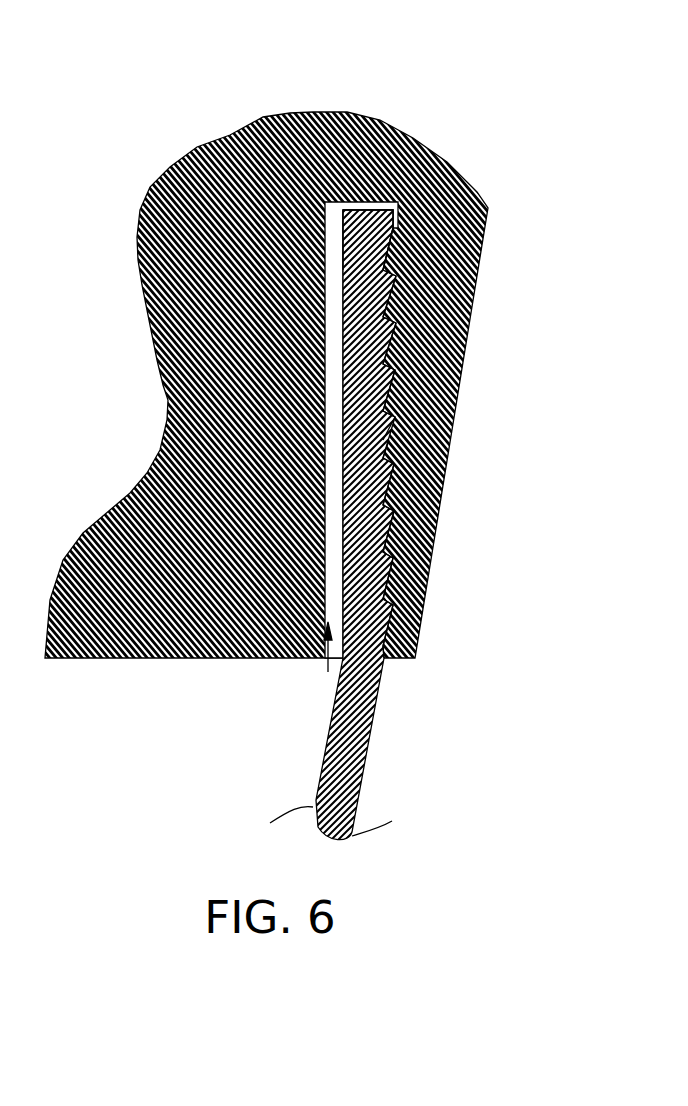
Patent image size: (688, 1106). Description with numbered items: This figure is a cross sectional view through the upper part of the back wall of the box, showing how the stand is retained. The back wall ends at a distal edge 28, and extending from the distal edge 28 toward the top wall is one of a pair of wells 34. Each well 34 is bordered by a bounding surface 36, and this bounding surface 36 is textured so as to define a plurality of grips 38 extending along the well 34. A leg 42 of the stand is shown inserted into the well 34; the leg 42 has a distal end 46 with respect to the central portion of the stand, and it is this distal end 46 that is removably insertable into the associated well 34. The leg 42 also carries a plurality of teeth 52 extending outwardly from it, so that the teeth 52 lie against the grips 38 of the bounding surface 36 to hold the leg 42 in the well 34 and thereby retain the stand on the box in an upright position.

The distal edge 28 is at (270, 658).
The distal end 46 is at (326, 265).
The bounding surface 36 is at (385, 232).
The leg 42 is at (363, 740).
The grips 38 is at (393, 420).
The teeth 52 is at (393, 595).
The well 34 is at (328, 672).